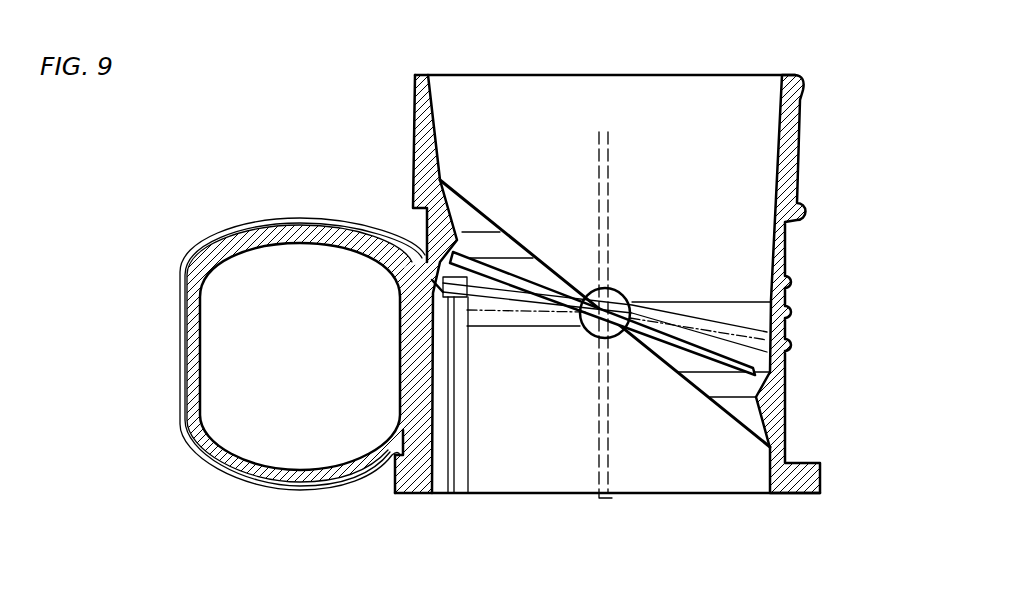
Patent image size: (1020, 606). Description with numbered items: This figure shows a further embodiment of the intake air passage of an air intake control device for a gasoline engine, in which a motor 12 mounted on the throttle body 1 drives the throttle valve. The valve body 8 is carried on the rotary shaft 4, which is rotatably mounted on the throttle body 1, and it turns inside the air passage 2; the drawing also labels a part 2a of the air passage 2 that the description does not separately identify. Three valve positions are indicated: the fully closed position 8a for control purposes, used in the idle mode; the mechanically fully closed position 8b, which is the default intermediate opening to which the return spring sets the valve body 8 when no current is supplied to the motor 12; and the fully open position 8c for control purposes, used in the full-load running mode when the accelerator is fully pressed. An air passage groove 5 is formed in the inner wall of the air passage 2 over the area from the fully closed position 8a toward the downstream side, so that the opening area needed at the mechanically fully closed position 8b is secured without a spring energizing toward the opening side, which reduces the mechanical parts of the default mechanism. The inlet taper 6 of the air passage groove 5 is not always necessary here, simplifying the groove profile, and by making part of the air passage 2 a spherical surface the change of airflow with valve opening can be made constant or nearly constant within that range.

The throttle body 1 is at (805, 216).
The air passage 2 is at (698, 170).
The inclined wall 2a is at (488, 243).
The rotary shaft 4 is at (610, 340).
The air passage groove 5 is at (370, 483).
The inlet taper 6 is at (403, 320).
The valve body 8 is at (475, 247).
The fully closed position for control purposes 8a is at (445, 258).
The mechanically fully closed position 8b is at (497, 305).
The fully open position for control purposes 8c is at (600, 200).
The motor 12 is at (267, 407).